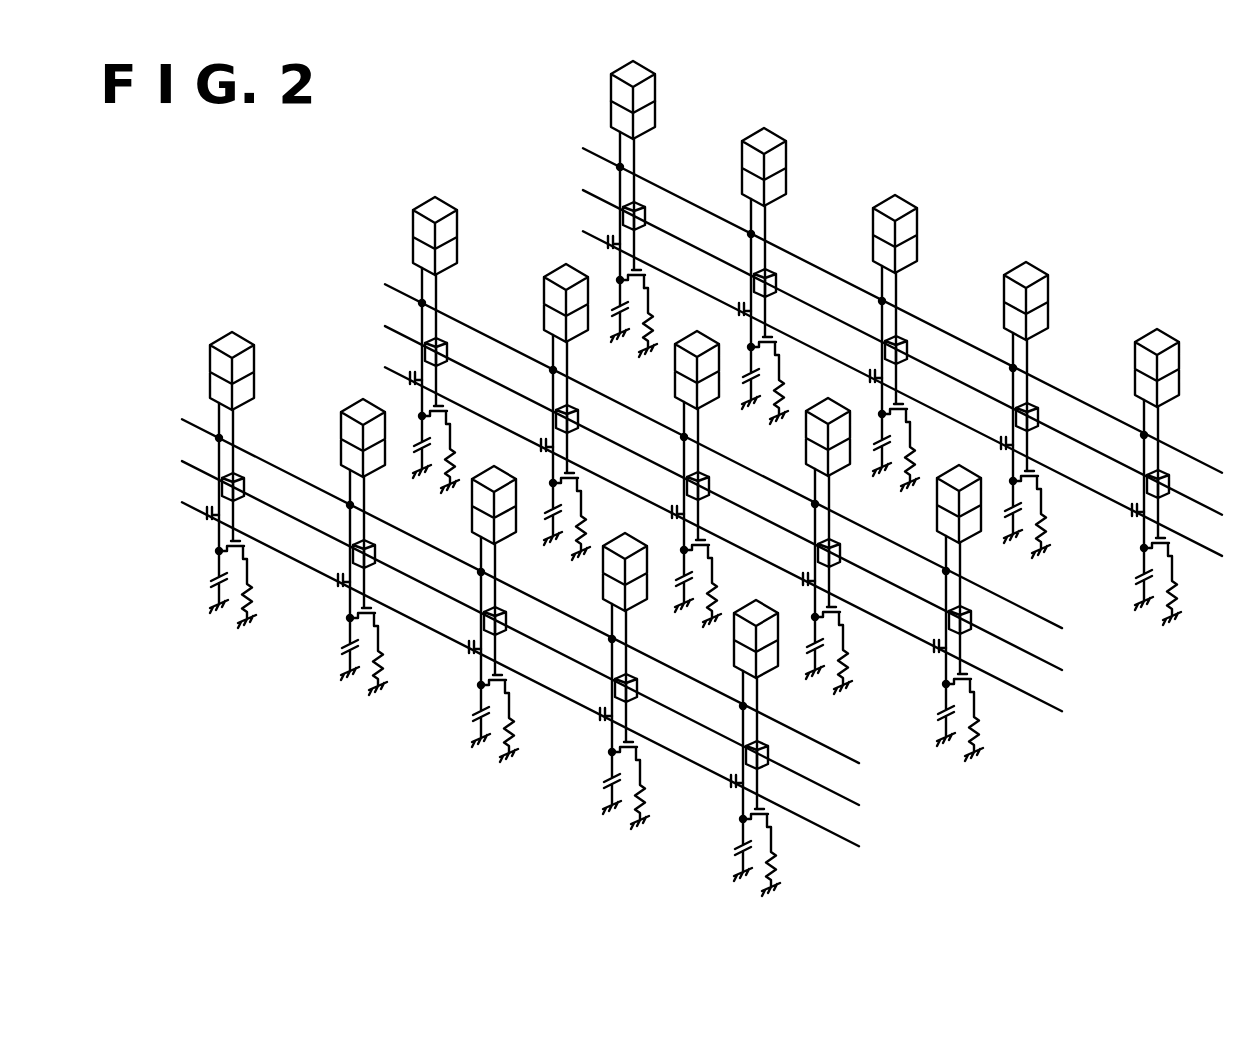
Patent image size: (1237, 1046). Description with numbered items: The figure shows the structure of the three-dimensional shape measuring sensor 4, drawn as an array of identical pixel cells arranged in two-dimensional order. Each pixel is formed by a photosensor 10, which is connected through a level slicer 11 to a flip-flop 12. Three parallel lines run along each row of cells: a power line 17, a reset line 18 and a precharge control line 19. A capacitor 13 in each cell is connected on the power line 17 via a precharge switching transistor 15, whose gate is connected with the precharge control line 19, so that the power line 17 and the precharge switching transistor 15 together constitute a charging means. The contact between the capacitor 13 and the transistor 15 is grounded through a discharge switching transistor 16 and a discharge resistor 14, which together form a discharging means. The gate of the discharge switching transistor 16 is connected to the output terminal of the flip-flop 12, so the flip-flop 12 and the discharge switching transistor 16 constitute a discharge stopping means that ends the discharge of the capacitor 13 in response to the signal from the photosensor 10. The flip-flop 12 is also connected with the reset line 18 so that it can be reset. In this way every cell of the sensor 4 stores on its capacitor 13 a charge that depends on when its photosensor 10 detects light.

The three-dimensional shape measuring sensor 4 is at (870, 178).
The photosensor 10 is at (648, 66).
The level slicer 11 is at (650, 117).
The flip-flop 12 is at (648, 214).
The capacitor 13 is at (604, 300).
The discharge resistor 14 is at (624, 347).
The precharge switching transistor 15 is at (606, 240).
The discharge switching transistor 16 is at (636, 283).
The power line 17 is at (926, 320).
The reset line 18 is at (946, 376).
The precharge control line 19 is at (1065, 478).